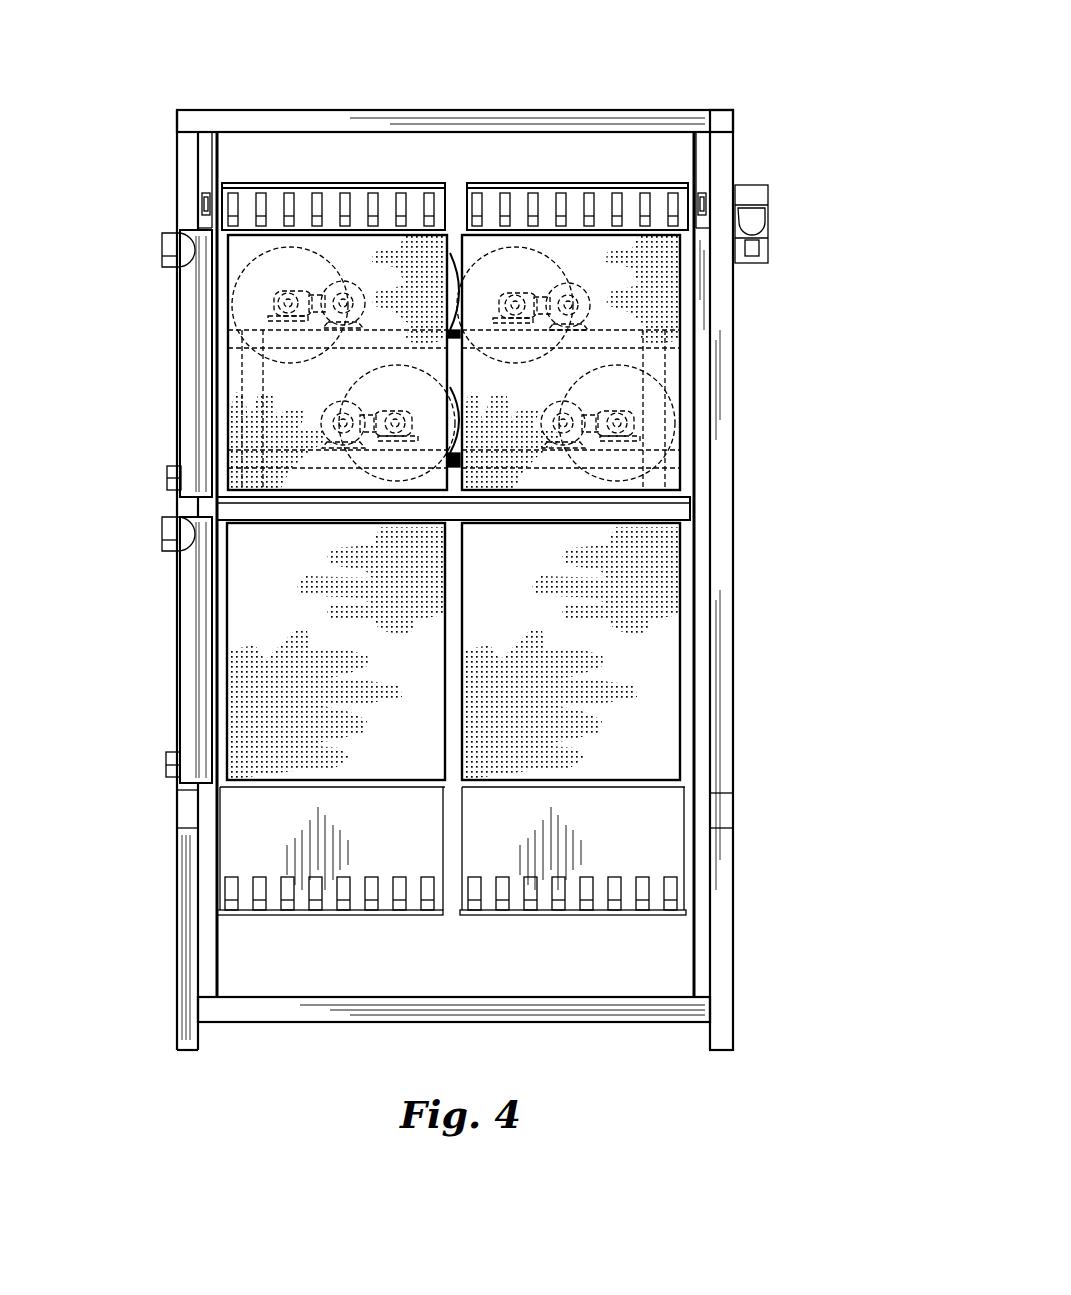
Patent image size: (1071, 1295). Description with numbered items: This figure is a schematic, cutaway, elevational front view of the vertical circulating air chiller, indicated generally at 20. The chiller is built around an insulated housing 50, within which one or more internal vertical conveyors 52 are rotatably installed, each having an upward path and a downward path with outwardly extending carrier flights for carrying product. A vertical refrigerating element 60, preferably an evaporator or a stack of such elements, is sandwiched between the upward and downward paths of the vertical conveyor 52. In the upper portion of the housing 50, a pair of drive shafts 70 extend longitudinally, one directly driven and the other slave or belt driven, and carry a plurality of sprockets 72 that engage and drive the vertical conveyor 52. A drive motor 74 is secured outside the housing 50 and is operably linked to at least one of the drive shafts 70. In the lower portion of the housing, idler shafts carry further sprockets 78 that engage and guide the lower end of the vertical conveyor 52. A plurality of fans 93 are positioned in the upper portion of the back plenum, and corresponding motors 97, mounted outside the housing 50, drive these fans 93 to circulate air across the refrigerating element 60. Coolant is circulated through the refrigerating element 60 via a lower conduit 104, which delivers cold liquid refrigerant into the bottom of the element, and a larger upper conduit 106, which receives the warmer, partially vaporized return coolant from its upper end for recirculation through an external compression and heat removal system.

The refrigeration unit cabinet 20 is at (602, 105).
The insulated housing 50 is at (720, 612).
The internal vertical conveyor 52 is at (252, 648).
The vertical refrigerating element 60 is at (283, 362).
The drive shaft 70 is at (201, 195).
The sprocket 72 is at (290, 193).
The drive motor 74 is at (762, 215).
The sprocket 78 is at (237, 906).
The fan 93 is at (456, 300).
The motor 97 is at (358, 285).
The lower conduit 104 is at (170, 474).
The upper conduit 106 is at (165, 251).